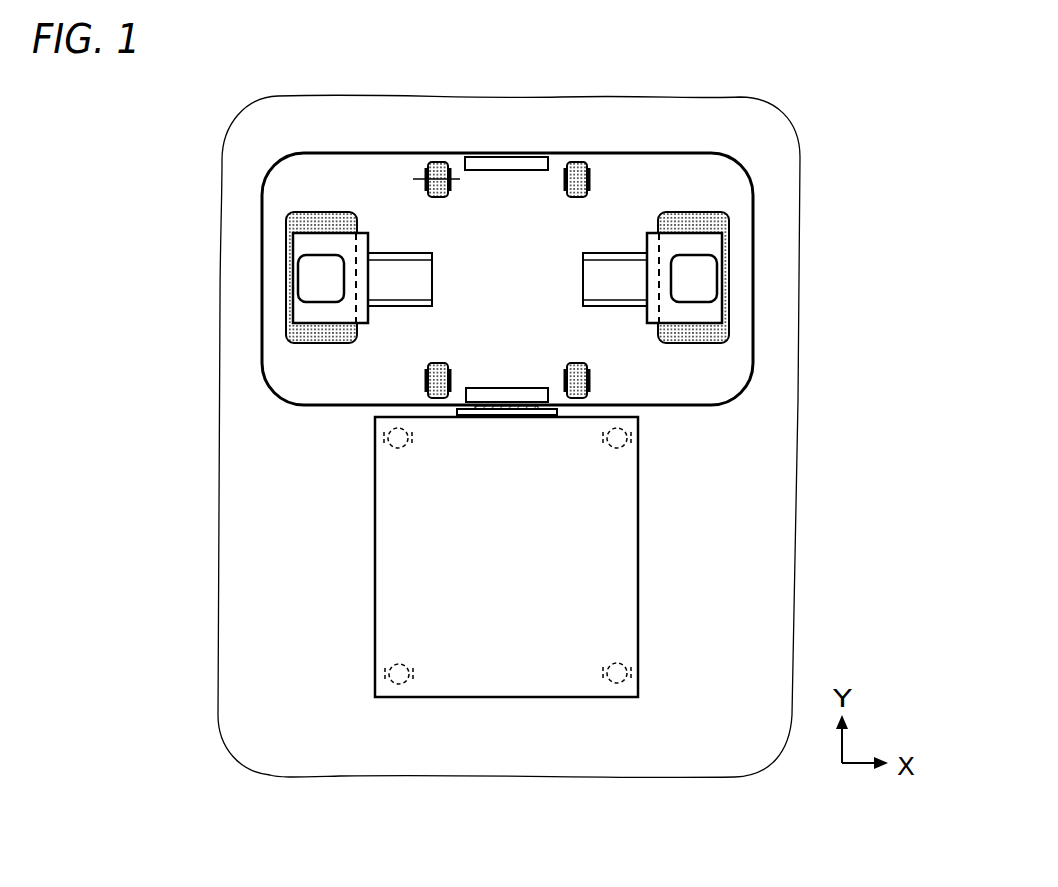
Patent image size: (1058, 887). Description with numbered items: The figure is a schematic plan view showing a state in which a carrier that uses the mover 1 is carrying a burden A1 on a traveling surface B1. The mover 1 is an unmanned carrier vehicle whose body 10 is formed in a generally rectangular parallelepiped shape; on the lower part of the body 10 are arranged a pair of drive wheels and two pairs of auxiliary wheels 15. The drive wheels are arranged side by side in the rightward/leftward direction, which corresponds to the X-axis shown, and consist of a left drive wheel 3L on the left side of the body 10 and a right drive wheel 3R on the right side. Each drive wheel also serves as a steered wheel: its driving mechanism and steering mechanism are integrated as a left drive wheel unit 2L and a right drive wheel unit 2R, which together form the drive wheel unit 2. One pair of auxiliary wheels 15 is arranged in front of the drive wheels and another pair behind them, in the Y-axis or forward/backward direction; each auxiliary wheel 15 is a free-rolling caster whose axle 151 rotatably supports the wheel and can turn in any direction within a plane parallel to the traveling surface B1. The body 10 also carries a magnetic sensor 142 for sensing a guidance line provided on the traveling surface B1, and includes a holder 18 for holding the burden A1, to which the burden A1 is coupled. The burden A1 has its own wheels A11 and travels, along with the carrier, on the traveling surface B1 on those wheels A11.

The mover 1 is at (511, 306).
The body 10 is at (697, 392).
The drive wheel unit 2 is at (511, 280).
The left drive wheel unit 2L is at (282, 303).
The right drive wheel unit 2R is at (736, 254).
The left drive wheel 3L is at (313, 340).
The right drive wheel 3R is at (687, 212).
The auxiliary wheel 15 is at (435, 198).
The axle 151 is at (420, 178).
The magnetic sensor 142 is at (506, 171).
The holder 18 is at (521, 407).
The burden A1 is at (638, 552).
The wheel A11 is at (409, 447).
The traveling surface B1 is at (770, 606).